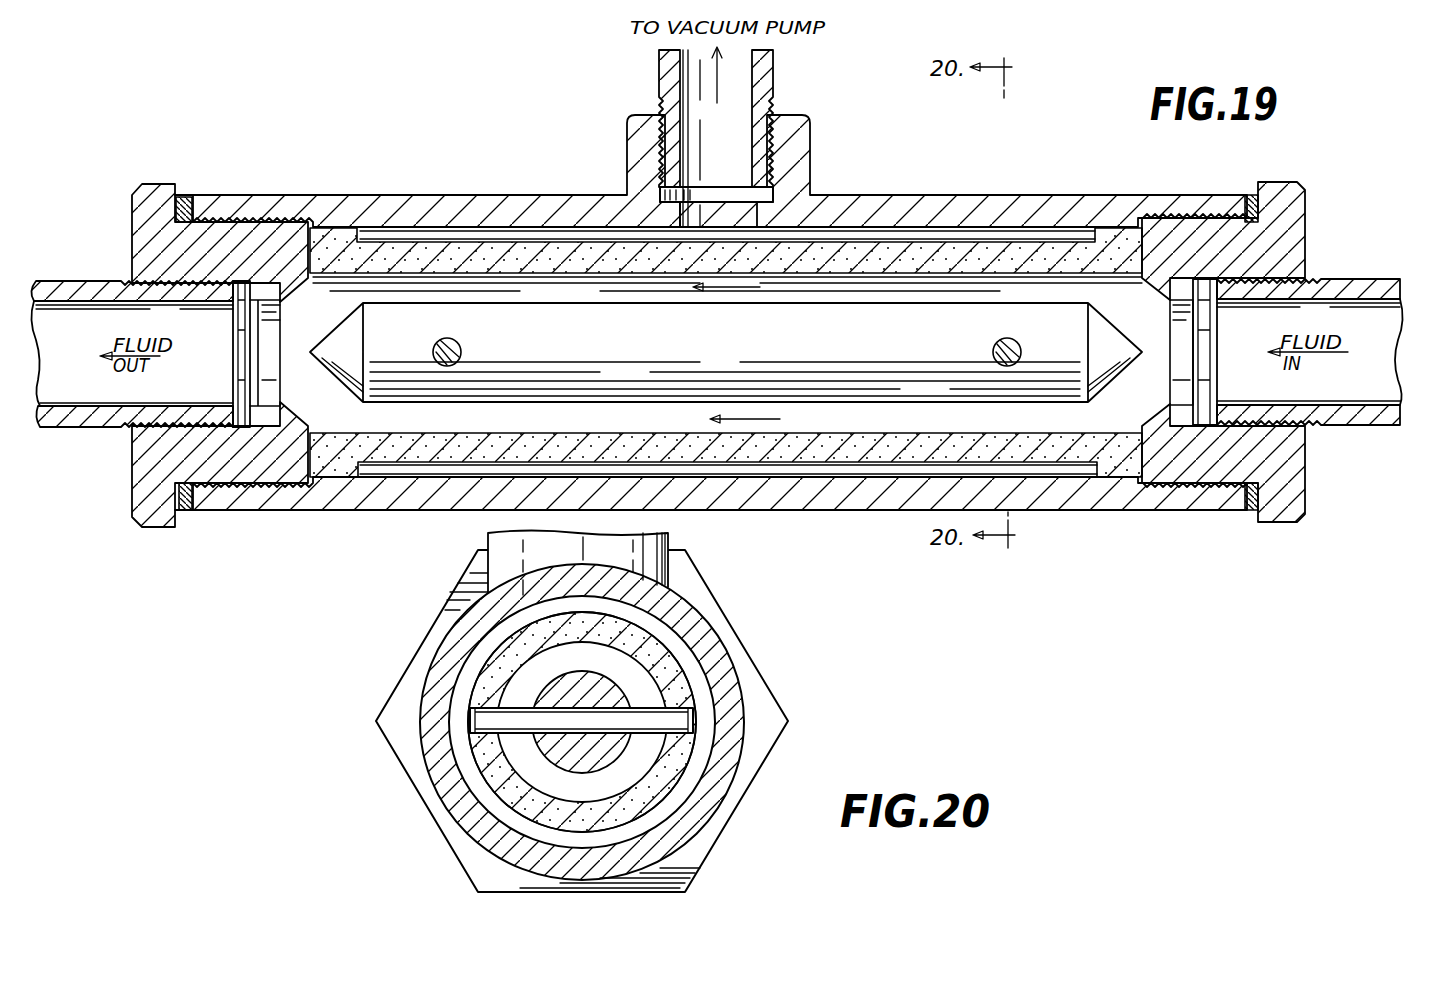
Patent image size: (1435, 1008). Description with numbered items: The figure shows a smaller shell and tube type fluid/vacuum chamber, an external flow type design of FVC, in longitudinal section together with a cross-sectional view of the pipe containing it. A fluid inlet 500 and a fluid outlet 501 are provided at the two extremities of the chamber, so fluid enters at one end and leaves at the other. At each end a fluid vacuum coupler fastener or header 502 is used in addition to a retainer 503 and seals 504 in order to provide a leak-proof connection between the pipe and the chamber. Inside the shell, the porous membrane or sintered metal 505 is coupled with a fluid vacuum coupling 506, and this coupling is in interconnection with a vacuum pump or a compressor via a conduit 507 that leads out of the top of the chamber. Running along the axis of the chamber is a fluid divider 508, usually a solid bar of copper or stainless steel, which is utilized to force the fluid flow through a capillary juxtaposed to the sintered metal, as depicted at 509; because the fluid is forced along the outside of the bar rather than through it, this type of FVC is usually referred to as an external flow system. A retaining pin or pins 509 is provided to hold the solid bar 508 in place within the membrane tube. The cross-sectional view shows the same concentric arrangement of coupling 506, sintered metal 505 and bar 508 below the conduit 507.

In FIG. 19, the fluid inlet 500 is at (1360, 312).
In FIG. 19, the fluid outlet 501 is at (73, 313).
In FIG. 19, the fluid vacuum coupler fastener or header 502 is at (131, 194).
In FIG. 19, the retainer 503 is at (707, 353).
In FIG. 19, the seals 504 is at (179, 196).
In FIG. 19, the porous membrane or sintered metal 505 is at (340, 241).
In FIG. 20, the porous membrane or sintered metal 505 is at (672, 683).
In FIG. 19, the fluid vacuum coupling 506 is at (597, 204).
In FIG. 20, the fluid vacuum coupling 506 is at (697, 636).
In FIG. 19, the conduit 507 is at (776, 72).
In FIG. 20, the conduit 507 is at (672, 547).
In FIG. 19, the fluid divider 508 is at (765, 345).
In FIG. 20, the fluid divider 508 is at (694, 722).
In FIG. 19, the retaining pin 509 is at (522, 290).